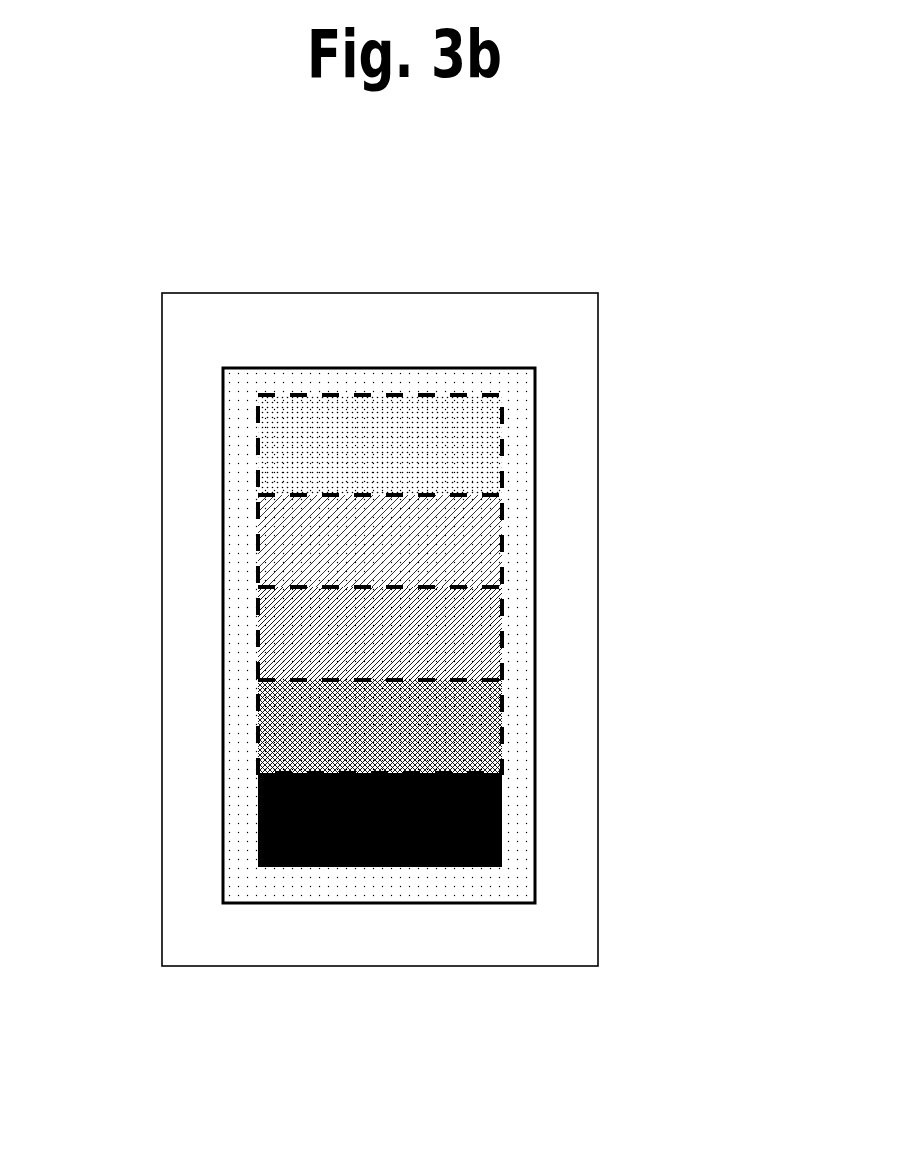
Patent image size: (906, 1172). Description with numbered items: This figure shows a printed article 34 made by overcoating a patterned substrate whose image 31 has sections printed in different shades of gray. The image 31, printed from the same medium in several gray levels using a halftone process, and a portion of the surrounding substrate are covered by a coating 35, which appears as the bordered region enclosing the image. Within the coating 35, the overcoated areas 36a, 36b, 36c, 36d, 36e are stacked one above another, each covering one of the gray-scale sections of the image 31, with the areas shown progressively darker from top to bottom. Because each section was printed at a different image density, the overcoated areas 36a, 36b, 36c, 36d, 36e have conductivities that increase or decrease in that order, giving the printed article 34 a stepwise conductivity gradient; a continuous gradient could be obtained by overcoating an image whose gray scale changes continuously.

The printed article 34 is at (162, 408).
The coating 35 is at (237, 582).
The image 31 is at (260, 780).
The overcoated area 36a is at (450, 445).
The overcoated area 36b is at (450, 531).
The overcoated area 36c is at (450, 618).
The overcoated area 36d is at (450, 717).
The overcoated area 36e is at (450, 805).